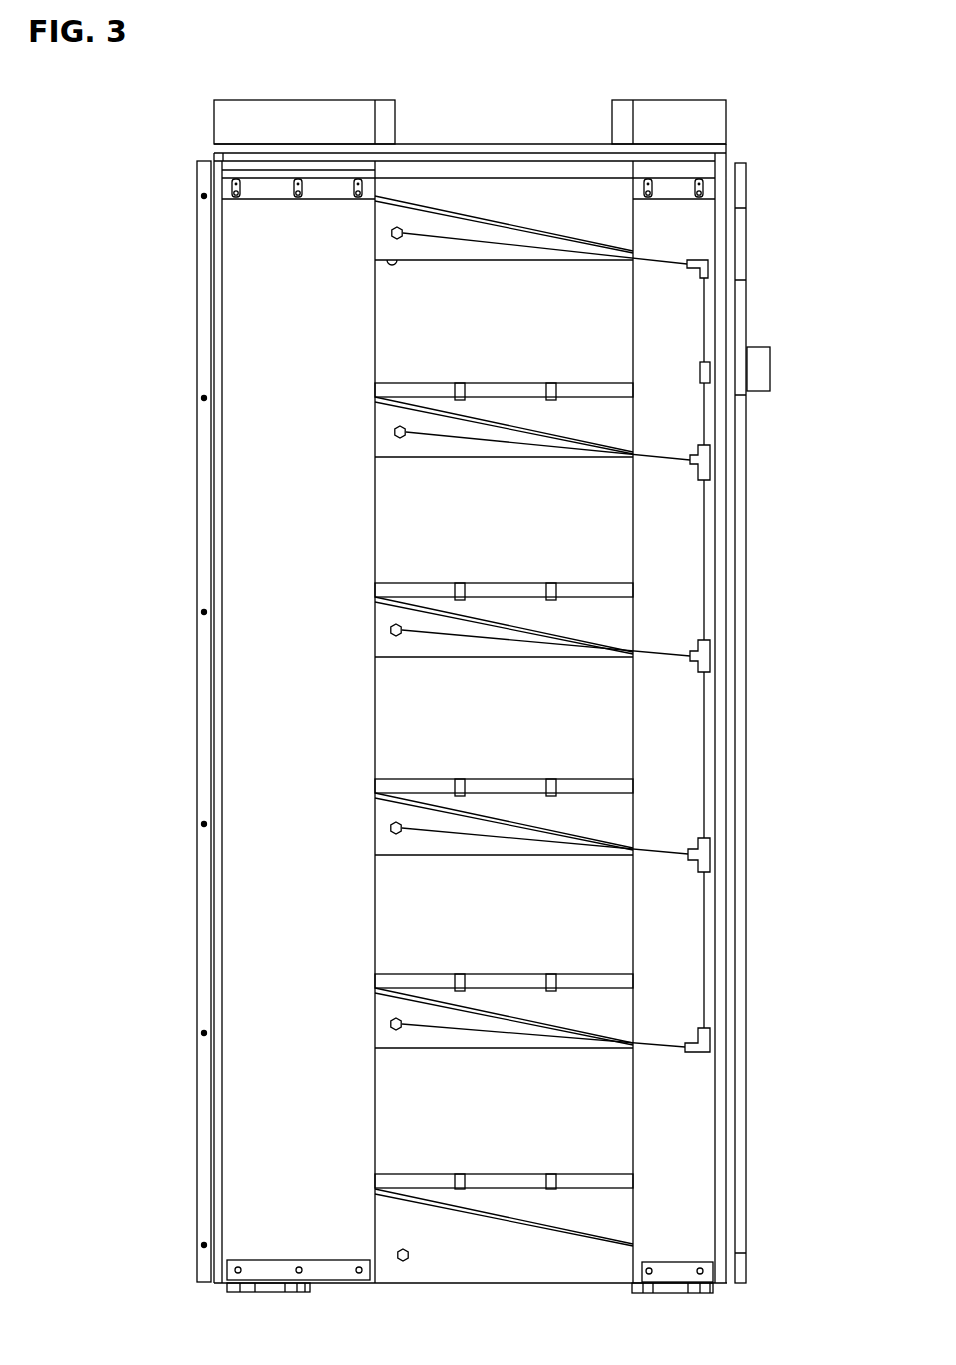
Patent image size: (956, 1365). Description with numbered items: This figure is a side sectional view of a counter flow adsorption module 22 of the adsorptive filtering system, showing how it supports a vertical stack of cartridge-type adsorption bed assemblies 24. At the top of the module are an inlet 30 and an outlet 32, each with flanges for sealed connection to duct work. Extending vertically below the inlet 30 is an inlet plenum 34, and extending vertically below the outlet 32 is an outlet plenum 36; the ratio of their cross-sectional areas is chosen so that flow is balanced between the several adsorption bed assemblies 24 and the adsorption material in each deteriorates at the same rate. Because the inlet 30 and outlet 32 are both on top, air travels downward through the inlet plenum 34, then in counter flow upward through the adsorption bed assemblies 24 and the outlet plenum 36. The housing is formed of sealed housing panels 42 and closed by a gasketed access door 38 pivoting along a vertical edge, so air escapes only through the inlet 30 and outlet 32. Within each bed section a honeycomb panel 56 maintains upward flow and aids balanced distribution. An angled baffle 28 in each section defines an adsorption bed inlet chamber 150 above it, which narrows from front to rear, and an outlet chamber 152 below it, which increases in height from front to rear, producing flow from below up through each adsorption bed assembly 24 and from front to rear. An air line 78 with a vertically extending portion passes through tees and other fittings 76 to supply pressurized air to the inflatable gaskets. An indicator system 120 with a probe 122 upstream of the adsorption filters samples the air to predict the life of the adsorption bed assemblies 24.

The counter flow adsorption module 22 is at (760, 122).
The adsorption bed assembly 24 is at (484, 343).
The baffle 28 is at (573, 432).
The inlet 30 is at (668, 108).
The outlet 32 is at (278, 108).
The inlet plenum 34 is at (683, 505).
The outlet plenum 36 is at (240, 458).
The access door 38 is at (750, 718).
The sealed housing panel 42 is at (200, 1134).
The honeycomb panel 56 is at (622, 392).
The fittings 76 is at (710, 265).
The air line 78 is at (465, 242).
The indicator system 120 is at (760, 368).
The probe 122 is at (700, 365).
The adsorption bed inlet chamber 150 is at (613, 422).
The outlet chamber 152 is at (388, 214).